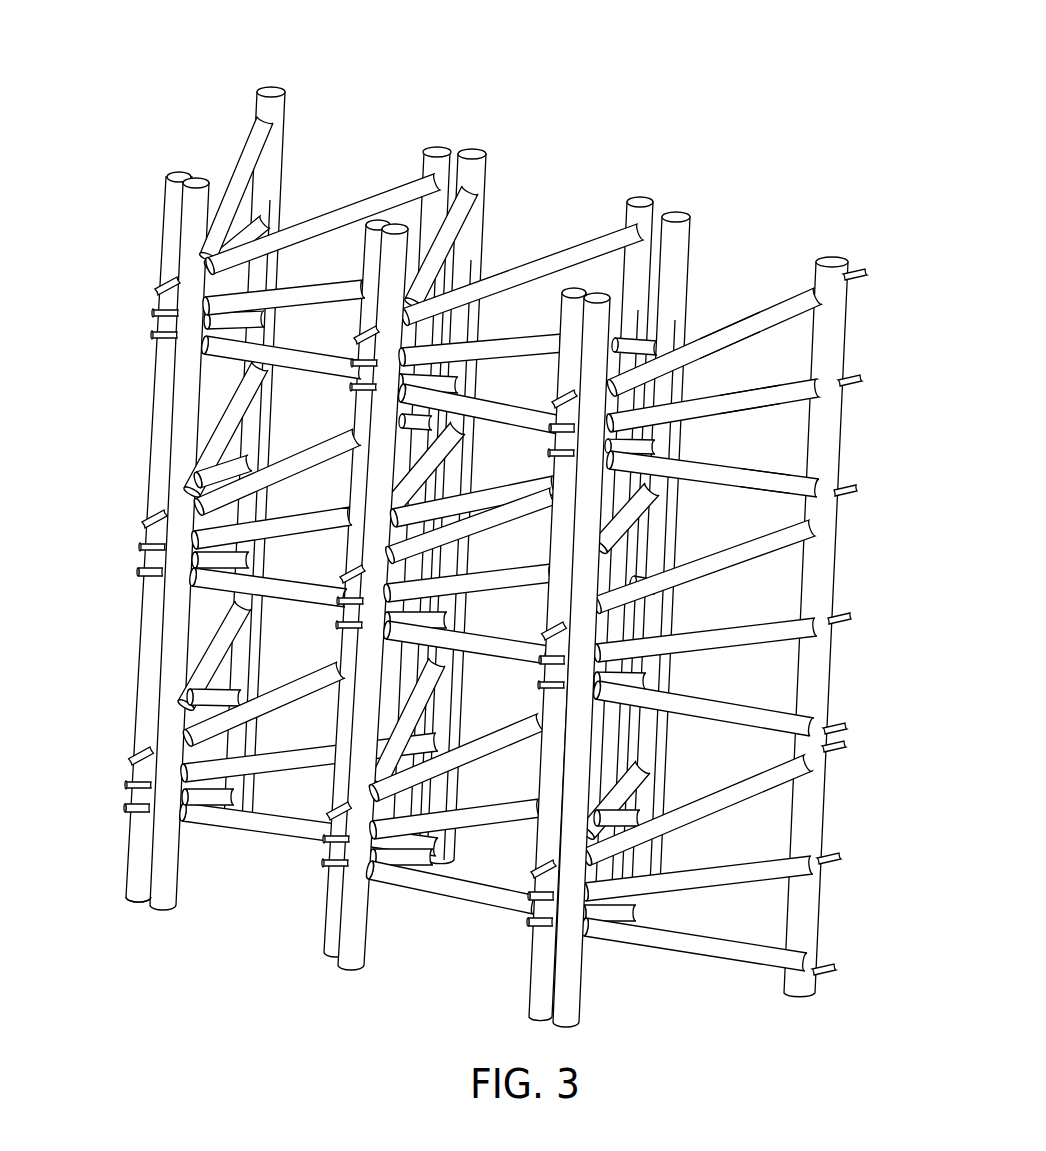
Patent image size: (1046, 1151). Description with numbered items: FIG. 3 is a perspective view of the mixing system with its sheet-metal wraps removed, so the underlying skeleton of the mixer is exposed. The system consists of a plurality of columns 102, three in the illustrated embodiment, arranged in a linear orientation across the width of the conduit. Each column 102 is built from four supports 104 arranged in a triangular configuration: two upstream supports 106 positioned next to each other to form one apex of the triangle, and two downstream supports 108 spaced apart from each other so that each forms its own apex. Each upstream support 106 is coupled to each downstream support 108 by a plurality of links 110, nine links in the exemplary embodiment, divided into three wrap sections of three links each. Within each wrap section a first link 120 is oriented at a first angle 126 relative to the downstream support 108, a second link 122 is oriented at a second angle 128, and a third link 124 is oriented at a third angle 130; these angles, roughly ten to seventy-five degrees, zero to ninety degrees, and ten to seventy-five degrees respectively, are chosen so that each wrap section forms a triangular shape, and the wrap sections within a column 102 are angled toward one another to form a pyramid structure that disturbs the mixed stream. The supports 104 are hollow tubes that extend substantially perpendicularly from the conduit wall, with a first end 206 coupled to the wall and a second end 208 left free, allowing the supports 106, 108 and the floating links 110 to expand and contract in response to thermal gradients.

The column 102 is at (347, 116).
The support 104 is at (258, 97).
The upstream support 106 is at (143, 520).
The downstream support 108 is at (271, 88).
The link 110 is at (790, 310).
The first link 120 is at (748, 330).
The second link 122 is at (745, 398).
The third link 124 is at (785, 478).
The first angle 126 is at (810, 343).
The second angle 128 is at (805, 393).
The third angle 130 is at (760, 470).
The first end 206 is at (130, 880).
The second end 208 is at (203, 177).